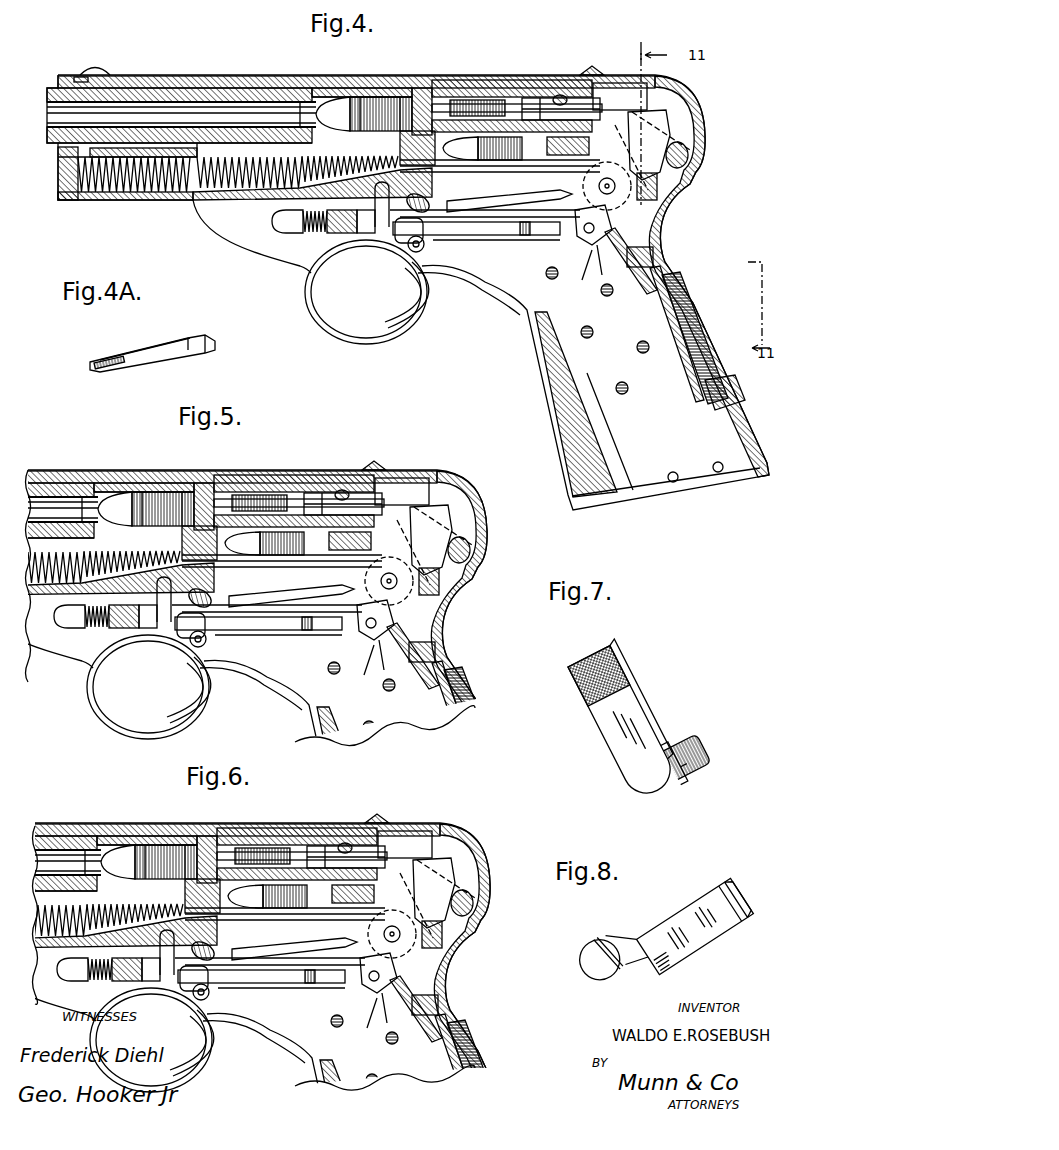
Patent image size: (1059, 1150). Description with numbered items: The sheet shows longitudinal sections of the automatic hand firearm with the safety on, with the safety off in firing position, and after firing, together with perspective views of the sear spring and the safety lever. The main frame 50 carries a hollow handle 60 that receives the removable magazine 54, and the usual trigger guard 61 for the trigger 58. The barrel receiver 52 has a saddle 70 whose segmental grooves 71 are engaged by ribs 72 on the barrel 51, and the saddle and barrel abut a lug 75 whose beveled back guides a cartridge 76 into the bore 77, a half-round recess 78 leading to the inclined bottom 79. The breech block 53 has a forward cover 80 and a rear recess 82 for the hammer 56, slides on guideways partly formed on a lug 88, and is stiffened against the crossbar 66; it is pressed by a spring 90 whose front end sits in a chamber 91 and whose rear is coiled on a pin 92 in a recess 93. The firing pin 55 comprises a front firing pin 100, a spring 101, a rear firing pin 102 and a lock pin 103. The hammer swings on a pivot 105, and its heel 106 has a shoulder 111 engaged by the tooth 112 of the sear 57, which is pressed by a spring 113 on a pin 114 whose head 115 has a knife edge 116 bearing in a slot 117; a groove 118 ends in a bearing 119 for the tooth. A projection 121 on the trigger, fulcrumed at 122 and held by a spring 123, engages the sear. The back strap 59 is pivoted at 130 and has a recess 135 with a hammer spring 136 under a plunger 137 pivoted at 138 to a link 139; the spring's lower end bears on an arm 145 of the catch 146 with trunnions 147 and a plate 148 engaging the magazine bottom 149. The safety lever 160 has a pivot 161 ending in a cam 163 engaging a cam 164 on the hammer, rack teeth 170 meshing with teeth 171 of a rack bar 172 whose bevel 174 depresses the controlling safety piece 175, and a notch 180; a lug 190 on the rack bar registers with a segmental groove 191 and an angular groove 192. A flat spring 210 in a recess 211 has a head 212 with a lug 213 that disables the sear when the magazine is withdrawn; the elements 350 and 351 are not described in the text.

In FIG. 4, the main frame 50 is at (484, 299).
In FIG. 5, the main frame 50 is at (265, 694).
In FIG. 4, the barrel 51 is at (248, 103).
In FIG. 5, the barrel 51 is at (52, 503).
In FIG. 6, the barrel 51 is at (68, 855).
In FIG. 4, the barrel receiver 52 is at (237, 236).
In FIG. 4, the breech block 53 is at (503, 86).
In FIG. 5, the breech block 53 is at (256, 478).
In FIG. 6, the breech block 53 is at (276, 829).
In FIG. 4, the magazine 54 is at (562, 398).
In FIG. 5, the magazine 54 is at (368, 713).
In FIG. 6, the magazine 54 is at (380, 1062).
In FIG. 4, the firing pin 55 is at (541, 103).
In FIG. 5, the firing pin 55 is at (311, 498).
In FIG. 6, the firing pin 55 is at (320, 848).
In FIG. 4, the hammer 56 is at (673, 128).
In FIG. 5, the hammer 56 is at (452, 524).
In FIG. 6, the hammer 56 is at (402, 837).
In FIG. 4, the sear 57 is at (462, 235).
In FIG. 5, the sear 57 is at (266, 627).
In FIG. 6, the sear 57 is at (292, 982).
In FIG. 4, the trigger 58 is at (404, 300).
In FIG. 5, the trigger 58 is at (182, 682).
In FIG. 6, the trigger 58 is at (192, 1040).
In FIG. 4, the back strap 59 is at (660, 240).
In FIG. 6, the back strap 59 is at (465, 1030).
In FIG. 4, the handle 60 is at (552, 372).
In FIG. 4, the trigger guard 61 is at (380, 344).
In FIG. 5, the trigger guard 61 is at (140, 740).
In FIG. 4, the crossbar 66 is at (628, 135).
In FIG. 5, the crossbar 66 is at (402, 530).
In FIG. 6, the crossbar 66 is at (368, 908).
In FIG. 4, the saddle 70 is at (300, 112).
In FIG. 5, the saddle 70 is at (68, 552).
In FIG. 4, the segmental grooves 71 is at (325, 112).
In FIG. 5, the lugs or ribs 72 is at (98, 498).
In FIG. 4, the lug 75 is at (442, 130).
In FIG. 5, the lug 75 is at (220, 545).
In FIG. 6, the lug 75 is at (222, 932).
In FIG. 4, the cartridge 76 is at (338, 108).
In FIG. 5, the cartridge 76 is at (268, 543).
In FIG. 6, the cartridge 76 is at (154, 853).
In FIG. 4, the bore 77 is at (372, 110).
In FIG. 4, the half-round recess 78 is at (423, 112).
In FIG. 4, the inclined bottom 79 is at (403, 112).
In FIG. 6, the inclined bottom 79 is at (187, 853).
In FIG. 4, the cover 80 is at (183, 78).
In FIG. 5, the cover 80 is at (125, 474).
In FIG. 4, the recess 82 is at (618, 80).
In FIG. 5, the recess 82 is at (422, 481).
In FIG. 6, the recess 82 is at (427, 841).
In FIG. 4, the lug 88 is at (558, 143).
In FIG. 5, the lug 88 is at (338, 553).
In FIG. 6, the lug 88 is at (330, 912).
In FIG. 4, the spring 90 is at (160, 195).
In FIG. 5, the spring 90 is at (32, 548).
In FIG. 6, the spring 90 is at (36, 905).
In FIG. 4, the chamber 91 is at (88, 197).
In FIG. 4, the pin 92 is at (215, 205).
In FIG. 5, the pin 92 is at (30, 567).
In FIG. 6, the pin 92 is at (36, 930).
In FIG. 4, the recess 93 is at (335, 196).
In FIG. 4, the front firing pin 100 is at (448, 105).
In FIG. 5, the front firing pin 100 is at (207, 498).
In FIG. 6, the front firing pin 100 is at (208, 856).
In FIG. 4, the spring 101 is at (470, 105).
In FIG. 5, the spring 101 is at (266, 498).
In FIG. 6, the spring 101 is at (245, 853).
In FIG. 4, the rear firing pin 102 is at (586, 76).
In FIG. 5, the rear firing pin 102 is at (362, 477).
In FIG. 6, the rear firing pin 102 is at (357, 838).
In FIG. 4, the lock pin 103 is at (563, 96).
In FIG. 5, the lock pin 103 is at (340, 488).
In FIG. 6, the lock pin 103 is at (340, 846).
In FIG. 4, the pivot 105 is at (605, 172).
In FIG. 5, the pivot 105 is at (380, 582).
In FIG. 6, the pivot 105 is at (395, 935).
In FIG. 4, the heel 106 is at (665, 228).
In FIG. 5, the heel 106 is at (448, 610).
In FIG. 6, the heel 106 is at (435, 977).
In FIG. 4, the shoulder 111 is at (578, 232).
In FIG. 5, the shoulder 111 is at (362, 600).
In FIG. 4, the tooth 112 is at (598, 255).
In FIG. 5, the tooth 112 is at (372, 642).
In FIG. 6, the tooth 112 is at (377, 982).
In FIG. 4, the spring 113 is at (345, 233).
In FIG. 5, the spring 113 is at (80, 655).
In FIG. 6, the spring 113 is at (110, 985).
In FIG. 4, the pin 114 is at (340, 233).
In FIG. 5, the pin 114 is at (75, 645).
In FIG. 6, the pin 114 is at (90, 996).
In FIG. 4, the head 115 is at (300, 233).
In FIG. 5, the head 115 is at (70, 630).
In FIG. 6, the head 115 is at (78, 986).
In FIG. 4, the knife edge 116 is at (283, 226).
In FIG. 5, the knife edge 116 is at (58, 617).
In FIG. 6, the knife edge 116 is at (63, 975).
In FIG. 4, the slot 117 is at (318, 233).
In FIG. 5, the slot 117 is at (113, 627).
In FIG. 6, the slot 117 is at (65, 985).
In FIG. 4, the groove 118 is at (520, 235).
In FIG. 5, the groove 118 is at (294, 621).
In FIG. 6, the groove 118 is at (258, 978).
In FIG. 4, the bearing 119 is at (589, 233).
In FIG. 5, the bearing 119 is at (350, 620).
In FIG. 6, the bearing 119 is at (368, 958).
In FIG. 4, the projection 121 is at (400, 243).
In FIG. 6, the projection 121 is at (185, 970).
In FIG. 4, the fulcrum 122 is at (424, 248).
In FIG. 5, the fulcrum 122 is at (192, 641).
In FIG. 6, the fulcrum 122 is at (210, 1005).
In FIG. 4, the spring 123 is at (422, 201).
In FIG. 5, the spring 123 is at (196, 598).
In FIG. 6, the spring 123 is at (205, 955).
In FIG. 4, the pivot 130 is at (737, 397).
In FIG. 4, the recess 135 is at (692, 305).
In FIG. 5, the recess 135 is at (465, 708).
In FIG. 6, the recess 135 is at (465, 1065).
In FIG. 4, the hammer spring 136 is at (708, 333).
In FIG. 5, the hammer spring 136 is at (465, 690).
In FIG. 6, the hammer spring 136 is at (450, 1068).
In FIG. 4, the plunger 137 is at (660, 268).
In FIG. 5, the plunger 137 is at (455, 660).
In FIG. 6, the plunger 137 is at (455, 1012).
In FIG. 4, the pivot 138 is at (630, 280).
In FIG. 5, the pivot 138 is at (402, 650).
In FIG. 6, the pivot 138 is at (398, 1006).
In FIG. 4, the link 139 is at (622, 257).
In FIG. 5, the link 139 is at (442, 623).
In FIG. 6, the link 139 is at (445, 995).
In FIG. 4, the arm 145 is at (728, 376).
In FIG. 4, the catch 146 is at (730, 432).
In FIG. 4, the trunnions 147 is at (705, 380).
In FIG. 4, the plate 148 is at (764, 476).
In FIG. 4, the bottom 149 is at (652, 492).
In FIG. 7, the safety lever 160 is at (625, 672).
In FIG. 8, the safety lever 160 is at (712, 885).
In FIG. 5, the pivot 161 is at (466, 544).
In FIG. 7, the pivot 161 is at (662, 740).
In FIG. 8, the pivot 161 is at (615, 940).
In FIG. 7, the cam 163 is at (700, 752).
In FIG. 8, the cam 163 is at (592, 975).
In FIG. 6, the cam 164 is at (442, 862).
In FIG. 4, the rack teeth 170 is at (693, 140).
In FIG. 5, the rack teeth 170 is at (482, 550).
In FIG. 6, the rack teeth 170 is at (492, 905).
In FIG. 8, the rack teeth 170 is at (628, 975).
In FIG. 4, the teeth 171 is at (690, 185).
In FIG. 5, the teeth 171 is at (478, 578).
In FIG. 6, the teeth 171 is at (470, 940).
In FIG. 4, the rack bar 172 is at (540, 167).
In FIG. 5, the rack bar 172 is at (320, 566).
In FIG. 6, the rack bar 172 is at (300, 925).
In FIG. 4, the bevel 174 is at (376, 205).
In FIG. 5, the bevel 174 is at (180, 604).
In FIG. 4, the controlling safety piece 175 is at (380, 227).
In FIG. 5, the controlling safety piece 175 is at (157, 617).
In FIG. 6, the controlling safety piece 175 is at (160, 956).
In FIG. 7, the notch 180 is at (678, 786).
In FIG. 8, the notch 180 is at (632, 932).
In FIG. 6, the lug 190 is at (448, 960).
In FIG. 4, the segmental groove 191 is at (670, 212).
In FIG. 5, the segmental groove 191 is at (455, 592).
In FIG. 6, the segmental groove 191 is at (442, 890).
In FIG. 6, the angular groove 192 is at (400, 900).
In FIG. 4, the flat spring 210 is at (545, 322).
In FIG. 4A, the flat spring 210 is at (165, 356).
In FIG. 6, the flat spring 210 is at (318, 975).
In FIG. 4, the recess 211 is at (540, 228).
In FIG. 6, the recess 211 is at (342, 975).
In FIG. 4, the head 212 is at (474, 201).
In FIG. 4A, the head 212 is at (108, 366).
In FIG. 6, the head 212 is at (262, 958).
In FIG. 4A, the lug 213 is at (125, 358).
In FIG. 4, the front sight 350 is at (97, 68).
In FIG. 4, the rear sight 351 is at (608, 72).
In FIG. 5, the rear sight 351 is at (385, 470).
In FIG. 6, the rear sight 351 is at (387, 826).